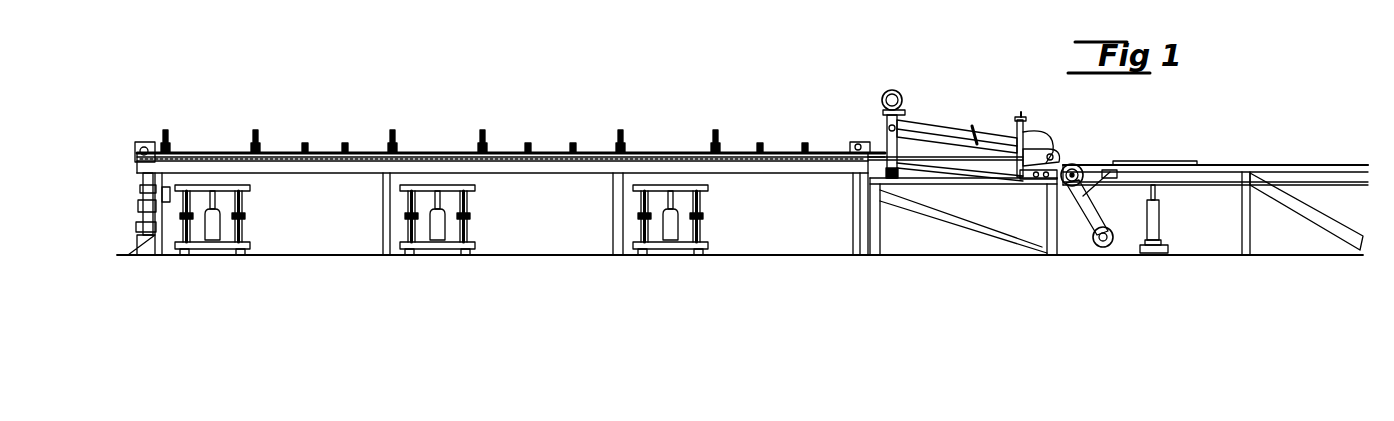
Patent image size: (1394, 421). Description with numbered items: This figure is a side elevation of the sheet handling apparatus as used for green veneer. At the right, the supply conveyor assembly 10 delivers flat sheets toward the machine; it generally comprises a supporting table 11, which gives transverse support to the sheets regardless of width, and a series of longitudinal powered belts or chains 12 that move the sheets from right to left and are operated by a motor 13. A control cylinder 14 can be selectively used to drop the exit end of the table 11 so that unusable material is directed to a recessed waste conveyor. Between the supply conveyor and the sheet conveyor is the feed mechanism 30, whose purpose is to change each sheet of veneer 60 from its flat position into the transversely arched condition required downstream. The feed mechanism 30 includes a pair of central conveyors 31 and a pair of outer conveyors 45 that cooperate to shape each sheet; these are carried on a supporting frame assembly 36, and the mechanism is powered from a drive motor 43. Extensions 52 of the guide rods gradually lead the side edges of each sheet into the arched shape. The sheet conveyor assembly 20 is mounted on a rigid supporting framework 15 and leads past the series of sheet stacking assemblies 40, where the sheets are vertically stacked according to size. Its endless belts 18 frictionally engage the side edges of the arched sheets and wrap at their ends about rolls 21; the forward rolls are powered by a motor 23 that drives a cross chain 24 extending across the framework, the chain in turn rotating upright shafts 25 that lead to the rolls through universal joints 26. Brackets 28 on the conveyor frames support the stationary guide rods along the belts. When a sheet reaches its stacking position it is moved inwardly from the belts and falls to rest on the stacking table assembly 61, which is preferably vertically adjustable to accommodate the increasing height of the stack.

The supply conveyor assembly 10 is at (1220, 160).
The supporting table 11 is at (1324, 174).
The powered belts or chains 12 is at (1185, 186).
The motor 13 is at (1100, 248).
The control cylinder 14 is at (1160, 222).
The rigid supporting framework 15 is at (383, 205).
The endless belts 18 is at (270, 173).
The sheet conveyor assembly 20 is at (541, 149).
The rolls 21 is at (137, 160).
The motor 23 is at (143, 204).
The cross chain 24 is at (128, 255).
The upright shafts 25 is at (143, 188).
The universal joints 26 is at (140, 226).
The brackets 28 is at (346, 149).
The feed mechanism 30 is at (940, 118).
The central conveyors 31 is at (975, 163).
The supporting frame assembly 36 is at (975, 222).
The sheet stacking assemblies 40 is at (206, 147).
The drive motor 43 is at (896, 92).
The outer conveyors 45 is at (988, 140).
The extensions 52 is at (1047, 140).
The veneer 60 is at (1150, 163).
The stacking table assembly 61 is at (250, 216).